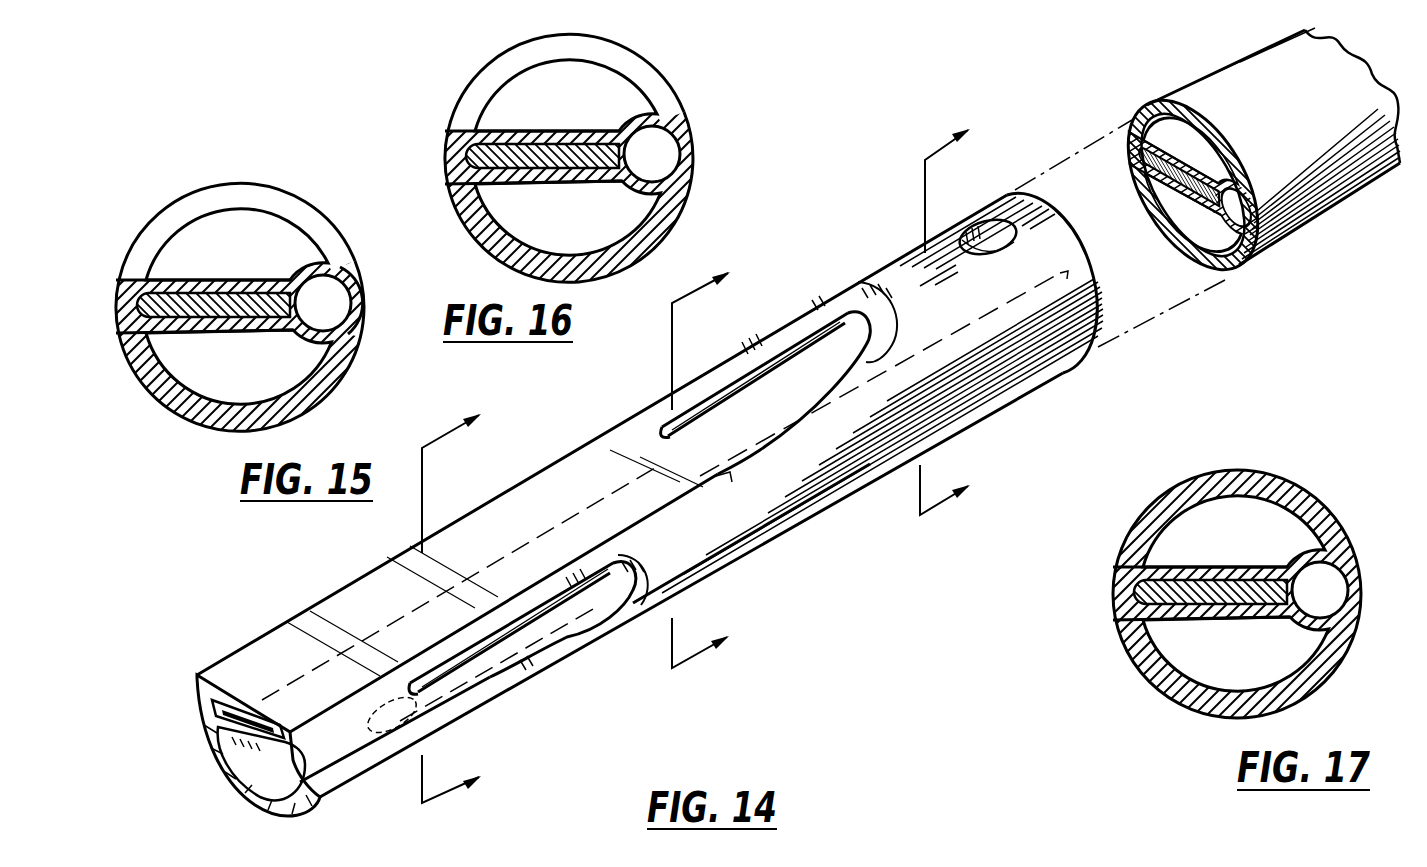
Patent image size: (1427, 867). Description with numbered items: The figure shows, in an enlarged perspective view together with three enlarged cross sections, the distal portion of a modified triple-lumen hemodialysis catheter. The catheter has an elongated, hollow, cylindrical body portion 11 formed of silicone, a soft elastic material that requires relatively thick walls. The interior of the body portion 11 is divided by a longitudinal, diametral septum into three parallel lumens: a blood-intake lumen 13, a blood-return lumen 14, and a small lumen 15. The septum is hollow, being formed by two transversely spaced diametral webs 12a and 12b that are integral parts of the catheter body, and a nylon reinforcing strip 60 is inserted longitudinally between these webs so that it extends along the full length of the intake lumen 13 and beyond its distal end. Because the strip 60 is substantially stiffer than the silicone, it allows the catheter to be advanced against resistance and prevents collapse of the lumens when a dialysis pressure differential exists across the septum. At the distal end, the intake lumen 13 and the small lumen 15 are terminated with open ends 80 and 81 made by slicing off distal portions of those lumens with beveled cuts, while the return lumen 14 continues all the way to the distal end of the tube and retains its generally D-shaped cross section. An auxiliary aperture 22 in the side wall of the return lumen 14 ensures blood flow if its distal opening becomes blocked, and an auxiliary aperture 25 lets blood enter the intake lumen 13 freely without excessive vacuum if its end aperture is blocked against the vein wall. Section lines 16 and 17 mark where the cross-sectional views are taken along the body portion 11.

In FIG. 14, the body portion 11 is at (784, 518).
In FIG. 15, the body portion 11 is at (223, 350).
In FIG. 16, the body portion 11 is at (552, 201).
In FIG. 17, the body portion 11 is at (1220, 598).
In FIG. 15, the diametral web 12a is at (203, 263).
In FIG. 16, the diametral web 12a is at (532, 114).
In FIG. 17, the diametral web 12a is at (1200, 550).
In FIG. 15, the diametral web 12b is at (204, 352).
In FIG. 16, the diametral web 12b is at (533, 203).
In FIG. 17, the diametral web 12b is at (1201, 639).
In FIG. 15, the blood-intake lumen 13 is at (237, 244).
In FIG. 16, the blood-intake lumen 13 is at (566, 95).
In FIG. 17, the blood-intake lumen 13 is at (1234, 531).
In FIG. 15, the blood-return lumen 14 is at (239, 367).
In FIG. 16, the blood-return lumen 14 is at (568, 218).
In FIG. 17, the blood-return lumen 14 is at (1236, 654).
In FIG. 14, the small lumen 15 is at (471, 599).
In FIG. 15, the small lumen 15 is at (323, 303).
In FIG. 16, the small lumen 15 is at (652, 154).
In FIG. 17, the small lumen 15 is at (1320, 590).
In FIG. 14, the section line 16 is at (719, 459).
In FIG. 14, the section line 17 is at (968, 309).
In FIG. 14, the auxiliary aperture 22 is at (345, 748).
In FIG. 14, the auxiliary aperture 25 is at (1017, 250).
In FIG. 15, the reinforcing strip 60 is at (315, 307).
In FIG. 16, the reinforcing strip 60 is at (569, 158).
In FIG. 17, the reinforcing strip 60 is at (1137, 594).
In FIG. 14, the open end 80 is at (793, 320).
In FIG. 15, the open end 80 is at (254, 230).
In FIG. 16, the open end 80 is at (583, 81).
In FIG. 14, the open end 81 is at (557, 660).
In FIG. 15, the open end 81 is at (377, 284).